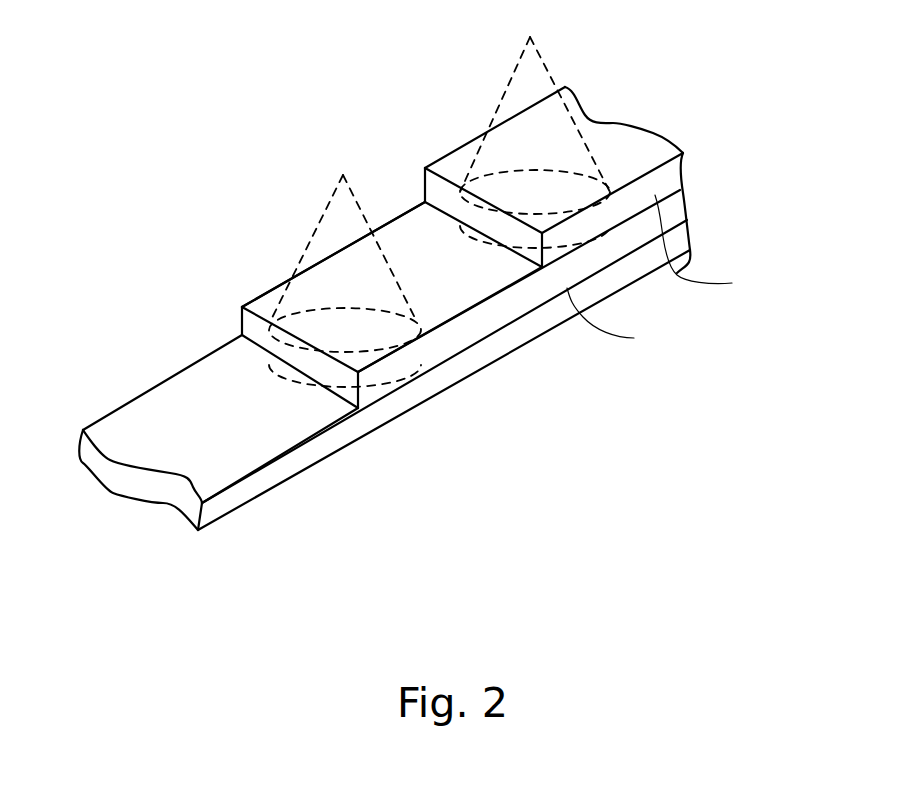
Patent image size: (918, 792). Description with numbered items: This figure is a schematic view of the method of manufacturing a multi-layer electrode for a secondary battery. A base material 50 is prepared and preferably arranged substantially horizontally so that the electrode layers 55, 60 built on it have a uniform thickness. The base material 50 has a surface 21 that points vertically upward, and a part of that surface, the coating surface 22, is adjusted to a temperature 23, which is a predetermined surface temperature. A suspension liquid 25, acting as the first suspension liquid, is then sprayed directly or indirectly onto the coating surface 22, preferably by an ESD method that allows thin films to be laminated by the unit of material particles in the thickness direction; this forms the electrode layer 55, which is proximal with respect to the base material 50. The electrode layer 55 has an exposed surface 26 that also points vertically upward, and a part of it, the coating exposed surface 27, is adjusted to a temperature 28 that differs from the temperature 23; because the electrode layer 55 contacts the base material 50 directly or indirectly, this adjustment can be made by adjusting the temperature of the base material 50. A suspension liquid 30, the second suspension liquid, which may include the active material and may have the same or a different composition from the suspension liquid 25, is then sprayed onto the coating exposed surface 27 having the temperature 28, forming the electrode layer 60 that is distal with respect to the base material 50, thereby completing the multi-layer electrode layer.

The surface 21 is at (280, 420).
The coating surface 22 is at (237, 300).
The temperature 23 is at (455, 407).
The suspension liquid 25 is at (307, 242).
The exposed surface 26 is at (435, 295).
The coating exposed surface 27 is at (450, 143).
The temperature 28 is at (628, 287).
The suspension liquid 30 is at (500, 90).
The base material 50 is at (380, 413).
The electrode layer 55 is at (616, 327).
The electrode layer 60 is at (709, 249).